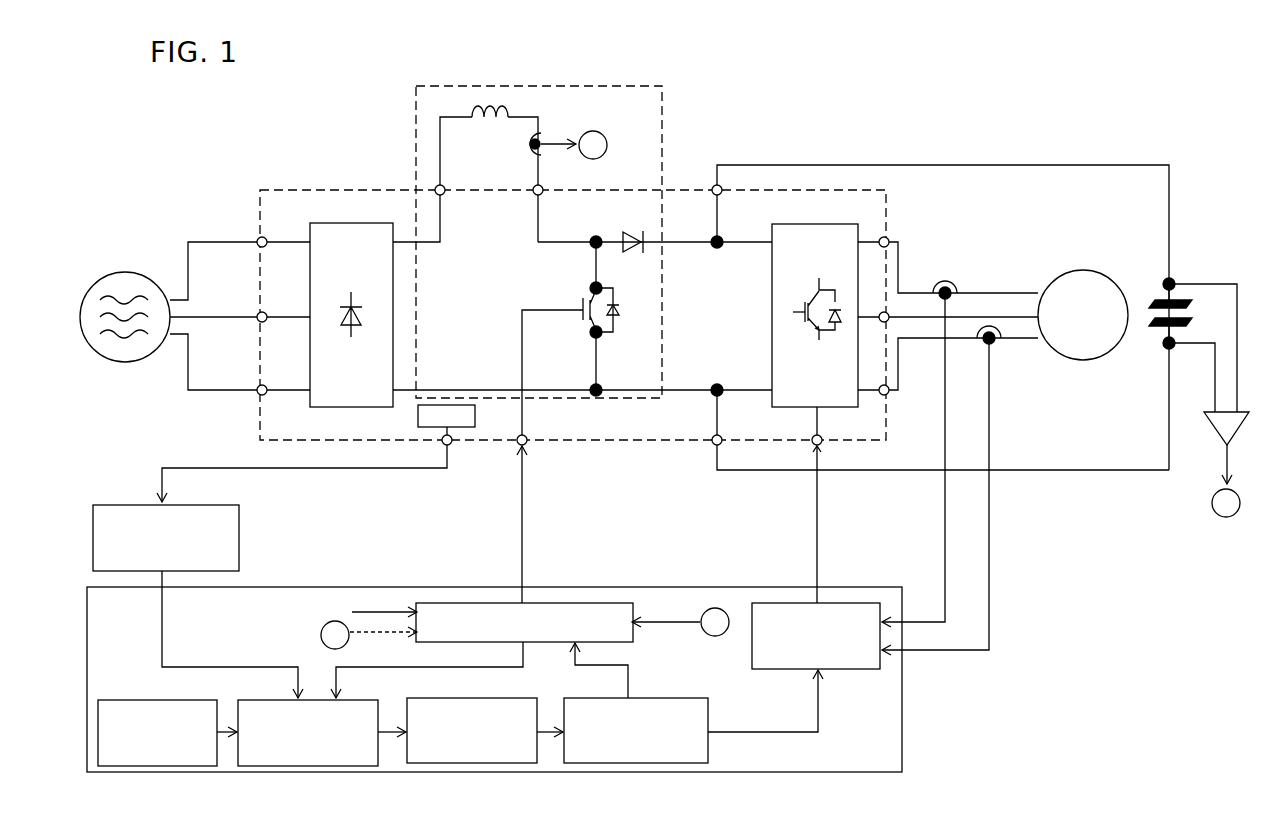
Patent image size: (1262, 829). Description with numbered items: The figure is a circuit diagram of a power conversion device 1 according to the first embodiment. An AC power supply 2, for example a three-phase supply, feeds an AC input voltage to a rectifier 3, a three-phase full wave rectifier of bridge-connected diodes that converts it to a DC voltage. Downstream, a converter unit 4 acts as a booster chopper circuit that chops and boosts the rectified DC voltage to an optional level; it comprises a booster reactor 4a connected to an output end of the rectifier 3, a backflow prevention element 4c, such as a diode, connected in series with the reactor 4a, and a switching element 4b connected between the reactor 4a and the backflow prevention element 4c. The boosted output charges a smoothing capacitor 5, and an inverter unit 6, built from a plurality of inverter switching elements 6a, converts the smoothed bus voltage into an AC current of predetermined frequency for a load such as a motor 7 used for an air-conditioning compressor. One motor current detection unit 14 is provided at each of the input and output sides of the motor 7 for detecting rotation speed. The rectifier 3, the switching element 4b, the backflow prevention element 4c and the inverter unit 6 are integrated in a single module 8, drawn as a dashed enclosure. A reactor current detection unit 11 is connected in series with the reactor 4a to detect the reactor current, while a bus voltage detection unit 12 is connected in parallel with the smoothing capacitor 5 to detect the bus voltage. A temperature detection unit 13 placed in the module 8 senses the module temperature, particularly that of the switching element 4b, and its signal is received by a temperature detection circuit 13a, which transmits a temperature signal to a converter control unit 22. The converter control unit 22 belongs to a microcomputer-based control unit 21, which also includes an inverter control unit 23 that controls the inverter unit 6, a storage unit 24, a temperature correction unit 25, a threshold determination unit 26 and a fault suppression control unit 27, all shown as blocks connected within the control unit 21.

The power conversion device 1 is at (927, 137).
The AC power supply 2 is at (128, 282).
The rectifier 3 is at (336, 223).
The converter unit 4 is at (416, 122).
The booster reactor 4a is at (507, 105).
The switching element 4b is at (578, 305).
The backflow prevention element 4c is at (640, 253).
The smoothing capacitor 5 is at (1152, 326).
The inverter unit 6 is at (792, 315).
The inverter switching element 6a is at (795, 302).
The motor 7 is at (1080, 275).
The module 8 is at (272, 190).
The reactor current detection unit 11 is at (522, 150).
The bus voltage detection unit 12 is at (1220, 428).
The temperature detection unit 13 is at (418, 417).
The temperature detection circuit 13a is at (239, 526).
The motor current detection unit 14 is at (943, 282).
The control unit 21 is at (374, 588).
The converter control unit 22 is at (437, 603).
The inverter control unit 23 is at (764, 603).
The storage unit 24 is at (115, 768).
The temperature correction unit 25 is at (268, 768).
The threshold determination unit 26 is at (427, 766).
The fault suppression control unit 27 is at (580, 766).